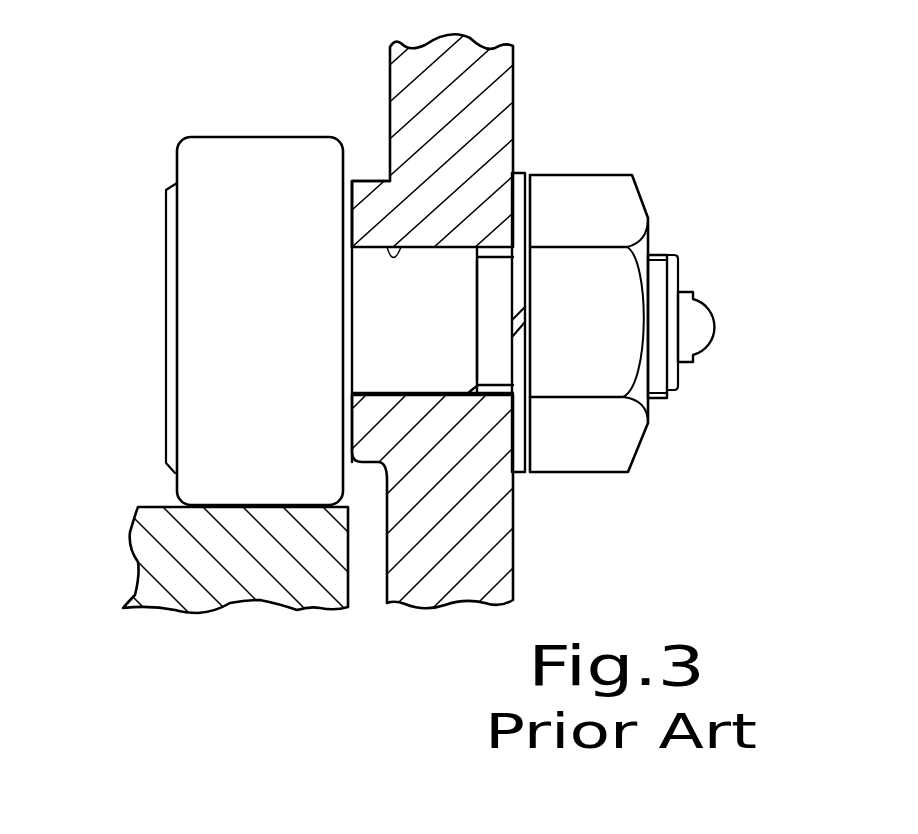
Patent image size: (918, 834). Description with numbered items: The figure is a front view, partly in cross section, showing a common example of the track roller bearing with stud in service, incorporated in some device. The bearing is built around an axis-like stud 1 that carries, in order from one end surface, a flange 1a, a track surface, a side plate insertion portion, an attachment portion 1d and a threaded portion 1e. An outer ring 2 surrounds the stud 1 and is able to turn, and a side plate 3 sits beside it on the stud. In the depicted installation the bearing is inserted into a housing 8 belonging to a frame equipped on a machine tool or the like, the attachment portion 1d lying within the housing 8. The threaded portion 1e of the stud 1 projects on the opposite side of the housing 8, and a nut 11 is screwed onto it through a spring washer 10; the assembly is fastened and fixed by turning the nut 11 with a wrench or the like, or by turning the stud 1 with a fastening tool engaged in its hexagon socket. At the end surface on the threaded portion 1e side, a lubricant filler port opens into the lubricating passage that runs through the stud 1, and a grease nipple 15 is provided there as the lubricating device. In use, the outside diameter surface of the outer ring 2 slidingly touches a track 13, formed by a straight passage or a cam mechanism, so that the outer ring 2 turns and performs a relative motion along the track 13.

The stud 1 is at (674, 248).
The flange 1a is at (177, 247).
The attachment portion 1d is at (415, 370).
The threaded portion 1e is at (657, 260).
The outer ring 2 is at (215, 148).
The side plate 3 is at (357, 177).
The housing 8 is at (412, 237).
The spring washer 10 is at (522, 178).
The nut 11 is at (592, 190).
The track 13 is at (157, 515).
The grease nipple 15 is at (713, 326).